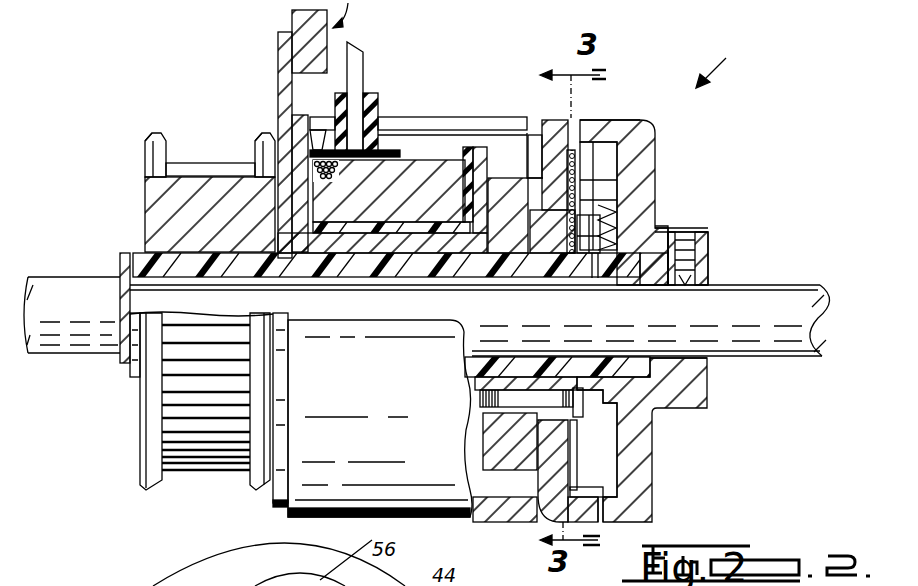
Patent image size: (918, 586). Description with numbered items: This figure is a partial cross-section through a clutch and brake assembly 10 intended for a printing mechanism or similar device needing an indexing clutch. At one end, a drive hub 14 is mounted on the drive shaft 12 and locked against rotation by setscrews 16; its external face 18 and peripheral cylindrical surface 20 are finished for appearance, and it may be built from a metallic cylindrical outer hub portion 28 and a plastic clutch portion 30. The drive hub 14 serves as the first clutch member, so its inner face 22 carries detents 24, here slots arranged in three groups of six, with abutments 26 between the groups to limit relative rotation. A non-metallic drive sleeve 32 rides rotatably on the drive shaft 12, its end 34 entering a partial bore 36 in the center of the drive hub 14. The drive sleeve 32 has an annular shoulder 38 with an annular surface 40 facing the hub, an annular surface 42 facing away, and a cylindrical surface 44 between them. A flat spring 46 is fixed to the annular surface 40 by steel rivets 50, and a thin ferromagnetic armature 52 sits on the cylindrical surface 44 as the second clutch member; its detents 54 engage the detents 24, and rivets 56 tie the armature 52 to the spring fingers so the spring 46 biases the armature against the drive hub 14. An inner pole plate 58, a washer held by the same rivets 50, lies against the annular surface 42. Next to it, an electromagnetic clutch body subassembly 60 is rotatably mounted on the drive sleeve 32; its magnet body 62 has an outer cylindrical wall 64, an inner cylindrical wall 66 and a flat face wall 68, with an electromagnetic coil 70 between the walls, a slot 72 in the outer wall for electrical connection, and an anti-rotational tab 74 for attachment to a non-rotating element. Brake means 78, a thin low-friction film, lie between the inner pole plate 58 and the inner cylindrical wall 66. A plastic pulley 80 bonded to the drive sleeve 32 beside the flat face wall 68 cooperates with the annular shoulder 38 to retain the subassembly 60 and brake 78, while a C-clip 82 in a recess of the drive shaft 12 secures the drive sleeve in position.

The clutch and brake assembly 10 is at (722, 68).
The drive shaft 12 is at (760, 330).
The drive hub 14 is at (690, 390).
The setscrews 16 is at (690, 258).
The external face 18 is at (655, 150).
The peripheral cylindrical surface 20 is at (640, 120).
The face 22 is at (600, 452).
The detents 24 is at (615, 186).
The abutments 26 is at (640, 216).
The cylindrical outer hub portion 28 is at (690, 372).
The clutch portion 30 is at (637, 433).
The drive sleeve 32 is at (655, 230).
The end of drive sleeve 34 is at (625, 285).
The partial bore 36 is at (620, 360).
The annular shoulder 38 is at (565, 248).
The annular surface 40 is at (576, 272).
The annular surface 42 is at (522, 240).
The cylindrical surface 44 is at (546, 197).
The flat spring 46 is at (577, 484).
The rivets 50 is at (483, 433).
The armature 52 is at (553, 132).
The detents 54 is at (593, 262).
The rivets 56 is at (578, 165).
The inner pole plate 58 is at (518, 216).
The electromagnetic clutch body subassembly 60 is at (470, 110).
The magnet body 62 is at (392, 125).
The outer cylindrical wall 64 is at (345, 395).
The inner cylindrical wall 66 is at (358, 256).
The flat face wall 68 is at (287, 128).
The electromagnetic coil 70 is at (404, 200).
The slot 72 is at (478, 128).
The anti-rotational tab 74 is at (285, 62).
The brake means 78 is at (477, 412).
The pulley 80 is at (145, 201).
The C-clip 82 is at (121, 256).